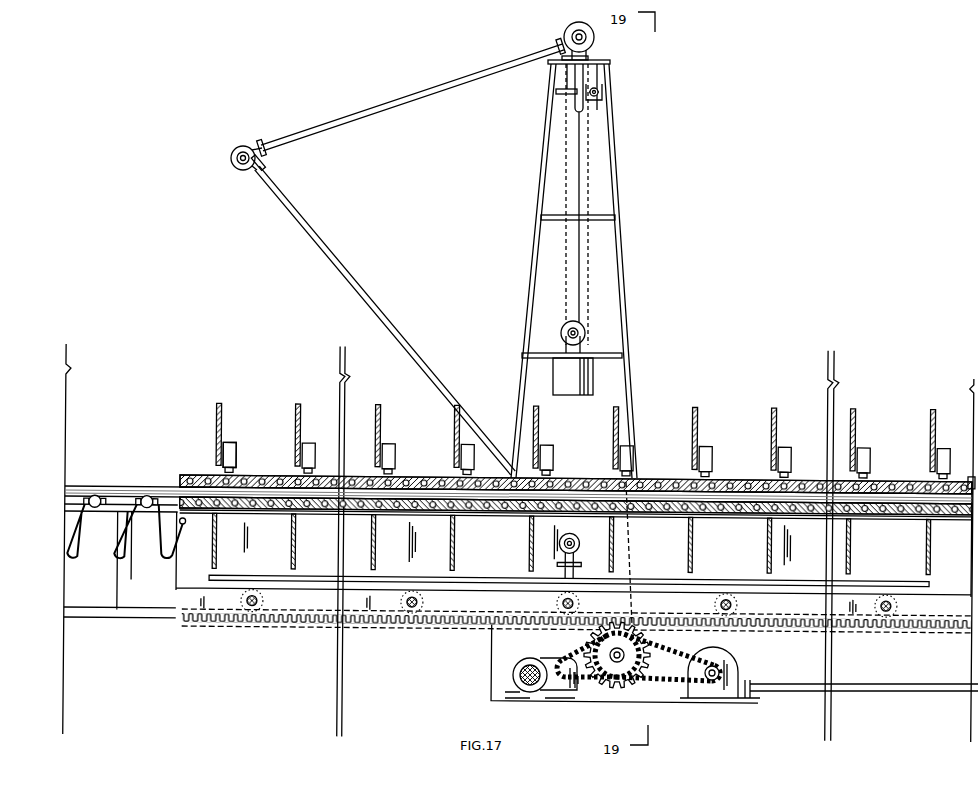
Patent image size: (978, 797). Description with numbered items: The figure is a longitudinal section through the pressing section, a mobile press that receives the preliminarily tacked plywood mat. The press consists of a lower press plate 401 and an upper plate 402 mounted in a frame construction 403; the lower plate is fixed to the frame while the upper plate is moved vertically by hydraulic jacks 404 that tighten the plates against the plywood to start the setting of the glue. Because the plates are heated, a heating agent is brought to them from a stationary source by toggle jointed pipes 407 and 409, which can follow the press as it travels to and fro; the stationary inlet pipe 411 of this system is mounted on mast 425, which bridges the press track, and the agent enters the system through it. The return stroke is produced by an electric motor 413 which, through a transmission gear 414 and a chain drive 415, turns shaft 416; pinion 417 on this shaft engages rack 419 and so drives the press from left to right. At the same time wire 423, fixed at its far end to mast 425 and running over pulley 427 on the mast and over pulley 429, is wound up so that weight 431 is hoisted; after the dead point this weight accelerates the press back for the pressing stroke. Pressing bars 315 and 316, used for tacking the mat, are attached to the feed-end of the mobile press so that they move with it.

The pressing bar 315 is at (970, 522).
The pressing bar 316 is at (972, 476).
The lower press plate 401 is at (177, 490).
The upper plate 402 is at (187, 474).
The frame construction 403 is at (217, 423).
The hydraulic jacks 404 is at (232, 448).
The toggle jointed pipe 407 is at (368, 300).
The toggle jointed pipe 409 is at (396, 103).
The stationary inlet pipe 411 is at (607, 62).
The electric motor 413 is at (520, 683).
The transmission gear 414 is at (567, 690).
The chain drive 415 is at (608, 678).
The shaft 416 is at (621, 662).
The pinion 417 is at (590, 637).
The rack 419 is at (486, 607).
The wire 423 is at (587, 250).
The mast 425 is at (613, 174).
The pulley 427 is at (601, 90).
The pulley 429 is at (585, 331).
The weight 431 is at (588, 383).